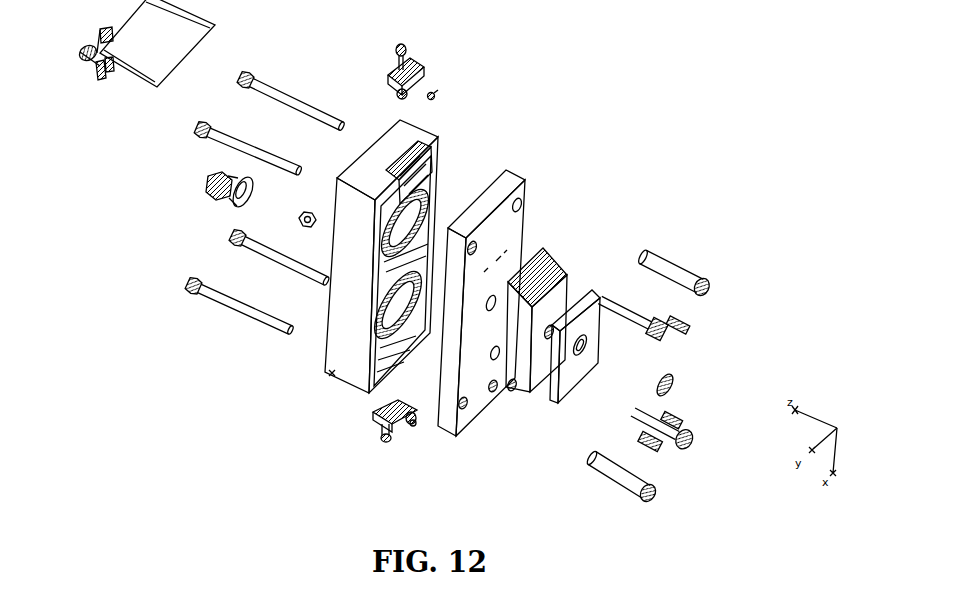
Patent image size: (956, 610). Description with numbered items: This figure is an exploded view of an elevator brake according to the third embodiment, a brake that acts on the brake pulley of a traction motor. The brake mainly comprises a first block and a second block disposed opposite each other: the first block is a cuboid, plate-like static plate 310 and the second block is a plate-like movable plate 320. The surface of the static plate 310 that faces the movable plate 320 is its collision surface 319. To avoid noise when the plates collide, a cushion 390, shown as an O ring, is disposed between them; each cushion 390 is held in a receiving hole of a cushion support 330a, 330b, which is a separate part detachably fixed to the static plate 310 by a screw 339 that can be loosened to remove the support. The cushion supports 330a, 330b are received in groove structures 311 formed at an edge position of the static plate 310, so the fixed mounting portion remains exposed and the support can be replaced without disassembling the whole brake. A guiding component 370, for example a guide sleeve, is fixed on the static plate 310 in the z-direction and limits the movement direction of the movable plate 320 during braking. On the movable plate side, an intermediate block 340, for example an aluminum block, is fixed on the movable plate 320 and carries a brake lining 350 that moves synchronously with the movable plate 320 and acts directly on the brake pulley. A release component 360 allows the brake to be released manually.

The static plate 310 is at (351, 272).
The groove 311 is at (400, 166).
The collision surface 319 is at (421, 341).
The movable plate 320 is at (443, 431).
The cushion support 330a is at (428, 75).
The cushion support 330b is at (373, 426).
The screw 339 is at (400, 44).
The intermediate block 340 is at (567, 300).
The brake lining 350 is at (598, 297).
The release component 360 is at (207, 190).
The guiding component 370 is at (685, 270).
The cushion 390 is at (432, 97).